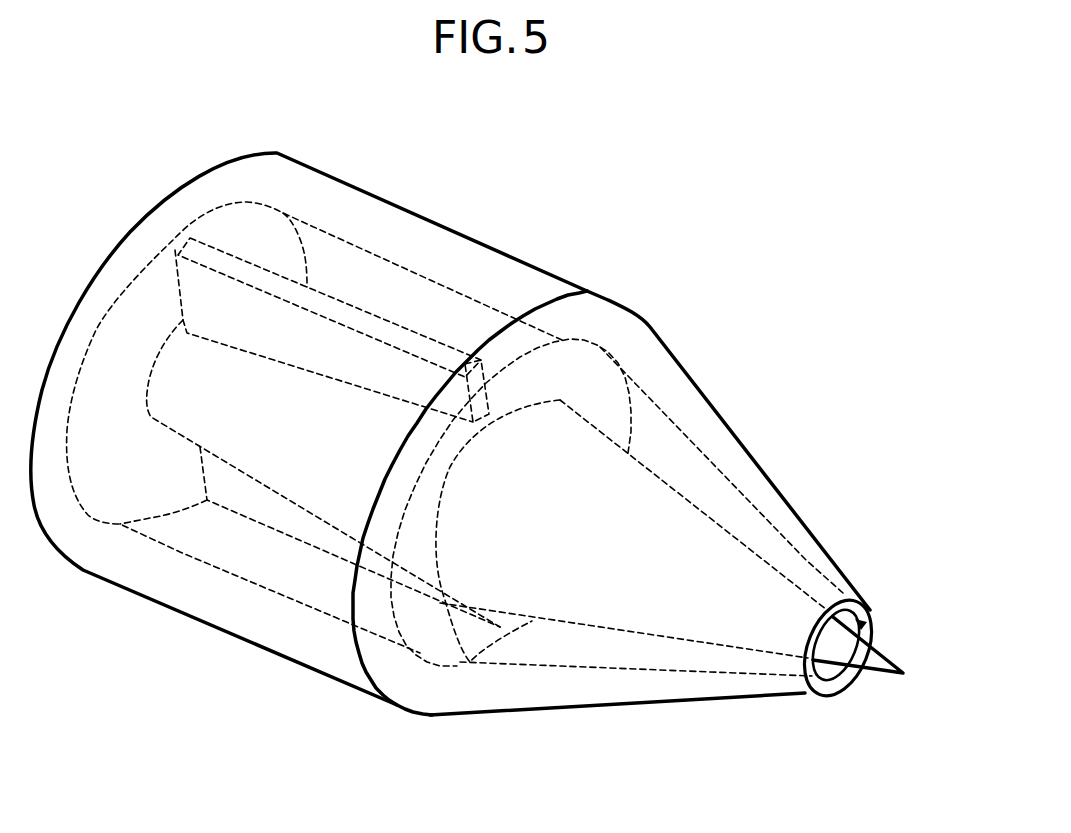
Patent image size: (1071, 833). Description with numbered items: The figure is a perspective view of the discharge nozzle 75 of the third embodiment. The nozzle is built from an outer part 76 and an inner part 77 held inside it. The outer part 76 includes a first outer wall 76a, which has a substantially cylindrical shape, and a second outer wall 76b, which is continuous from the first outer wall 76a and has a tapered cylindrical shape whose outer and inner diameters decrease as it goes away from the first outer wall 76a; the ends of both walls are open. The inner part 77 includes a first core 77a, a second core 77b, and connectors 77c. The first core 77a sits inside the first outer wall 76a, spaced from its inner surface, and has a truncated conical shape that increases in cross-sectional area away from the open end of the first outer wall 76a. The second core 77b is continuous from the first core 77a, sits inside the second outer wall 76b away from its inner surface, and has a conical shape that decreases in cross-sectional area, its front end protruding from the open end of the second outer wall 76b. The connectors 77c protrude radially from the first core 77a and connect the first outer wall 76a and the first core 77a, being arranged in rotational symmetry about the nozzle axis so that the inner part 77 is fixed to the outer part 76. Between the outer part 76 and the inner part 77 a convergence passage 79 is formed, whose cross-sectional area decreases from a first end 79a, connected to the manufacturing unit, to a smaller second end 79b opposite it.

The discharge nozzle 75 is at (620, 177).
The outer part 76 is at (398, 200).
The first outer wall 76a is at (343, 200).
The second outer wall 76b is at (653, 352).
The inner part 77 is at (663, 477).
The first core 77a is at (263, 490).
The second core 77b is at (608, 632).
The connectors 77c is at (434, 355).
The convergence passage 79 is at (210, 553).
The first end 79a is at (135, 328).
The second end 79b is at (868, 624).